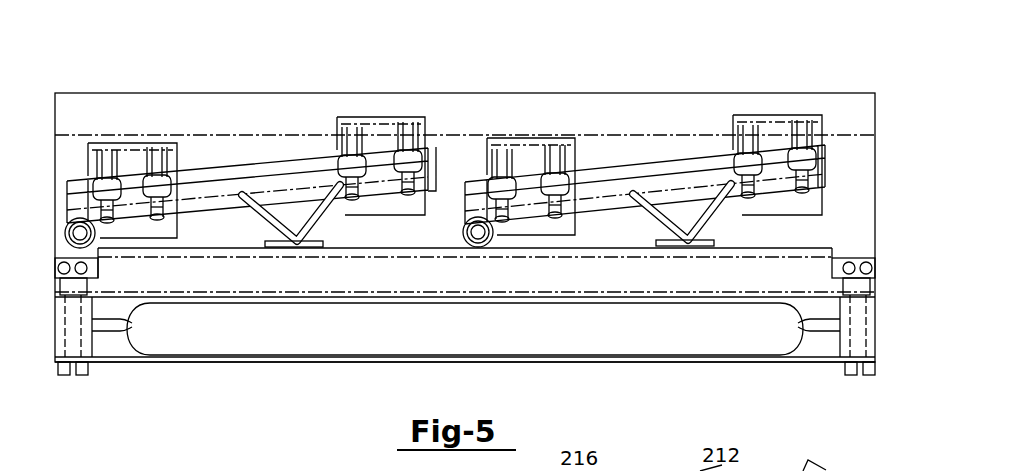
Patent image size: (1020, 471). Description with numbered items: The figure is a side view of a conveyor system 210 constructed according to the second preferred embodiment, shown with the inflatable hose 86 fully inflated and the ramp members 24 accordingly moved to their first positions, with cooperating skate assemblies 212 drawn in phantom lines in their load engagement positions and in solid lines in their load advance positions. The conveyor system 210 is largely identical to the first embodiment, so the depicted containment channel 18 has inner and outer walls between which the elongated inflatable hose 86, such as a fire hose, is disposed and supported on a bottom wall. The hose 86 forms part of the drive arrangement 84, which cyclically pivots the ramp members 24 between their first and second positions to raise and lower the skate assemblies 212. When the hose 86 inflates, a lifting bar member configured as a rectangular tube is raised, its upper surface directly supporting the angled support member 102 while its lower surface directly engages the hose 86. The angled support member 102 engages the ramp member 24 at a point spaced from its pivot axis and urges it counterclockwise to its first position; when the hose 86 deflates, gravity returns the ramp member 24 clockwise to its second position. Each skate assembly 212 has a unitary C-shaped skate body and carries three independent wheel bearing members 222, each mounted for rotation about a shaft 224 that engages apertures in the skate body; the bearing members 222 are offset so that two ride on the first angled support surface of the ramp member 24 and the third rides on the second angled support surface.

The conveyor system 210 is at (82, 64).
The containment channel 18 is at (384, 98).
The ramp member 24 is at (657, 172).
The shaft 224 is at (101, 160).
The bearing member 222 is at (159, 183).
The skate assembly 212 is at (517, 133).
The angled support member 102 is at (318, 228).
The inflatable hose 86 is at (212, 340).
The drive arrangement 84 is at (345, 358).